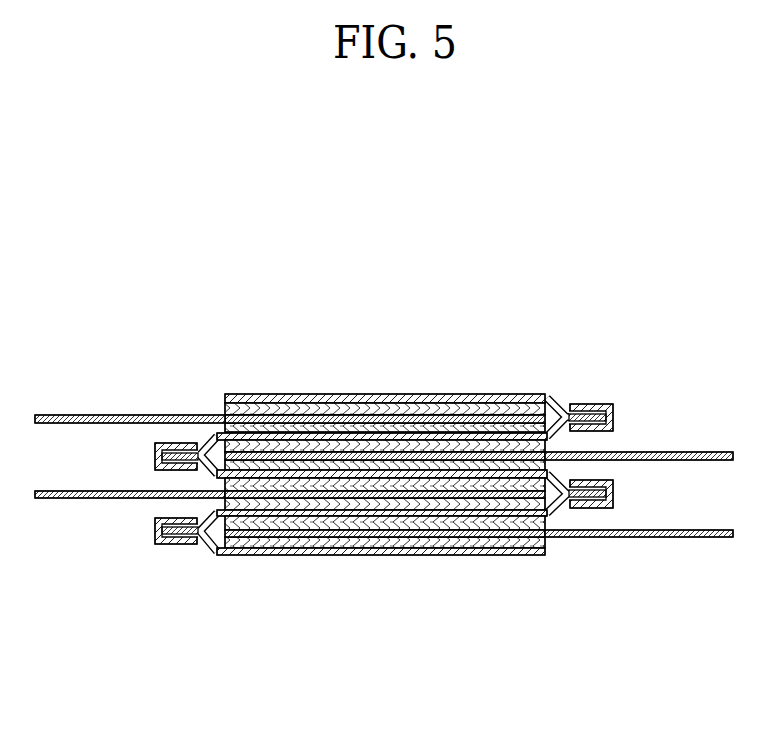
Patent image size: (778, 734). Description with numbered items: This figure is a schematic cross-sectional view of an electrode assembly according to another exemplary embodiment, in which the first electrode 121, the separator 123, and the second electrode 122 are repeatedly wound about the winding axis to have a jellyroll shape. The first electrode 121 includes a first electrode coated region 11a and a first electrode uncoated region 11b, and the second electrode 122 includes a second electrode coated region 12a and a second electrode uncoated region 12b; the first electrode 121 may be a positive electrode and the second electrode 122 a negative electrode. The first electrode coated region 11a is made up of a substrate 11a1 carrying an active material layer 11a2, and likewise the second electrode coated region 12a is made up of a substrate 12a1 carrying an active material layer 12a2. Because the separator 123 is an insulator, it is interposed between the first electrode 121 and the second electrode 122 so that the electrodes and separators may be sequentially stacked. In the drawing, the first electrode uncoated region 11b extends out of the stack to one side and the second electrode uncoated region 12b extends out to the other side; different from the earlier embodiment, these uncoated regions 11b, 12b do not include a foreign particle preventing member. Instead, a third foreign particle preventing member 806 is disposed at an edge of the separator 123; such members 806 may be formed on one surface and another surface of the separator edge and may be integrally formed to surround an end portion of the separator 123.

The first electrode 121 is at (290, 411).
The second electrode 122 is at (475, 544).
The separator 123 is at (452, 399).
The first electrode coated region 11a is at (385, 361).
The substrate 11a1 is at (340, 415).
The active material layer 11a2 is at (300, 426).
The first electrode uncoated region 11b is at (130, 440).
The second electrode coated region 12a is at (385, 589).
The substrate 12a1 is at (500, 534).
The active material layer 12a2 is at (455, 538).
The second electrode uncoated region 12b is at (683, 451).
The third foreign particle preventing member 806 is at (157, 443).